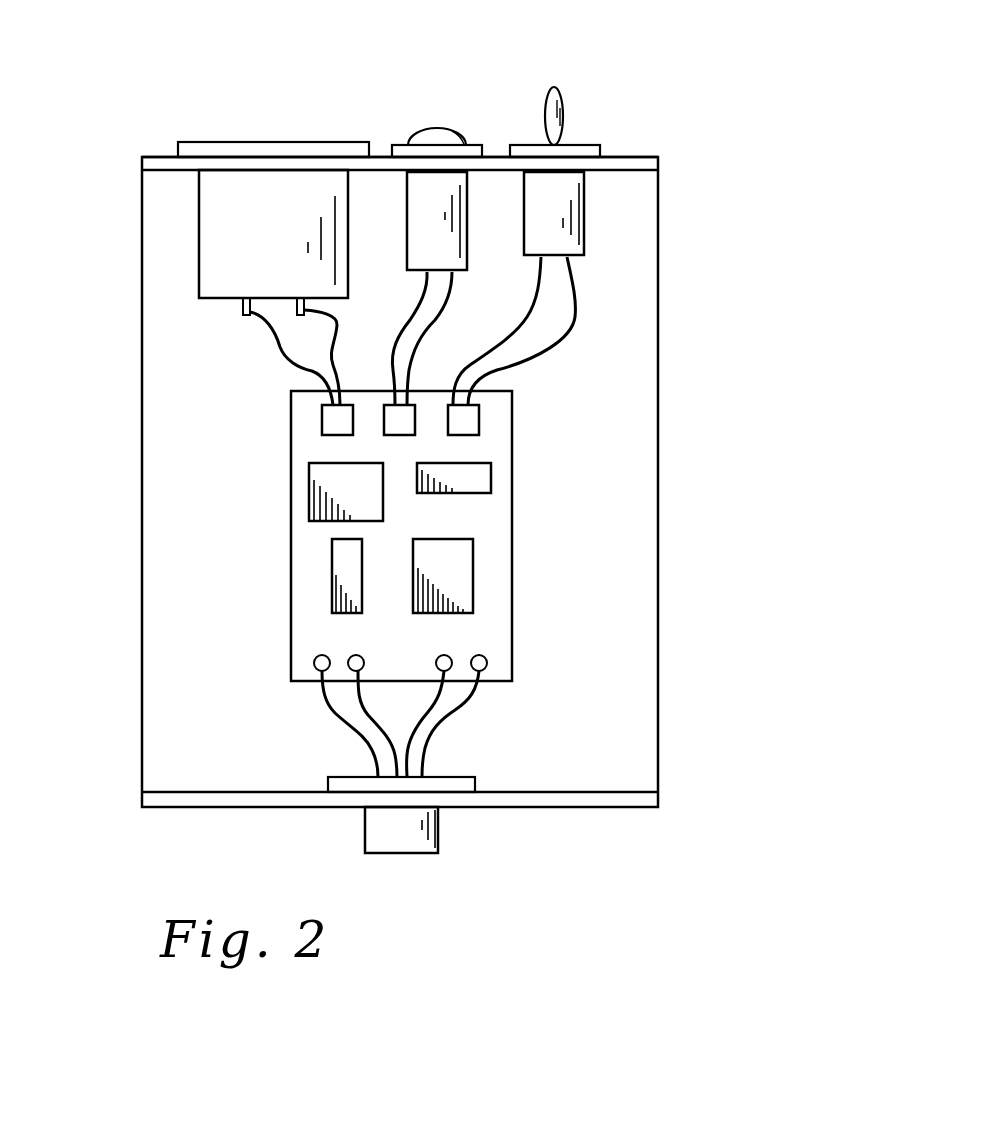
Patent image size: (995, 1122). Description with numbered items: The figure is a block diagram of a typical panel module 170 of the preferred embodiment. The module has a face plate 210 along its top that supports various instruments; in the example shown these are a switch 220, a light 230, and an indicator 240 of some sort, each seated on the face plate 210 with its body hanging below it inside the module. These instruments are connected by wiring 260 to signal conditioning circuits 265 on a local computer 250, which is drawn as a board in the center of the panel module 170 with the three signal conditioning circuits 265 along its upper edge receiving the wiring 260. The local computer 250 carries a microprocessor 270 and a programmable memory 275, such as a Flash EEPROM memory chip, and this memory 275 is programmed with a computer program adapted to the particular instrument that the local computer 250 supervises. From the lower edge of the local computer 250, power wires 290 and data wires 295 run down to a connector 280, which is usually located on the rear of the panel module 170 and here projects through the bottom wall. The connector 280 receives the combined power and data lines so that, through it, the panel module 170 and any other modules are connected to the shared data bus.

The panel module 170 is at (659, 247).
The face plate 210 is at (659, 156).
The switch 220 is at (564, 117).
The light 230 is at (436, 128).
The indicator 240 is at (273, 142).
The local computer 250 is at (290, 432).
The wiring 260 is at (287, 362).
The signal conditioning circuits 265 is at (479, 420).
The microprocessor 270 is at (473, 576).
The programmable memory 275 is at (332, 558).
The connector 280 is at (403, 853).
The power wires 290 is at (475, 703).
The data wires 295 is at (332, 713).